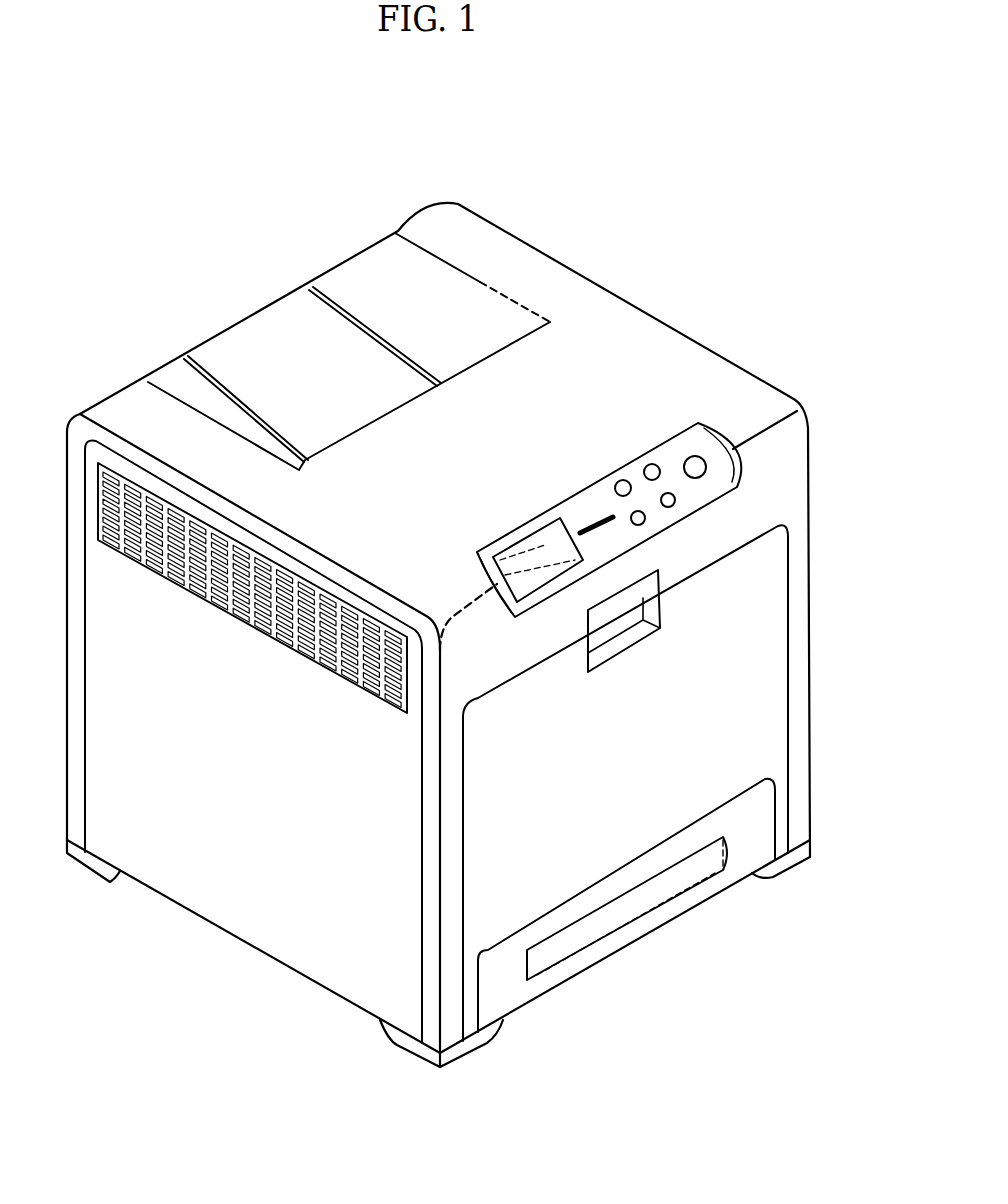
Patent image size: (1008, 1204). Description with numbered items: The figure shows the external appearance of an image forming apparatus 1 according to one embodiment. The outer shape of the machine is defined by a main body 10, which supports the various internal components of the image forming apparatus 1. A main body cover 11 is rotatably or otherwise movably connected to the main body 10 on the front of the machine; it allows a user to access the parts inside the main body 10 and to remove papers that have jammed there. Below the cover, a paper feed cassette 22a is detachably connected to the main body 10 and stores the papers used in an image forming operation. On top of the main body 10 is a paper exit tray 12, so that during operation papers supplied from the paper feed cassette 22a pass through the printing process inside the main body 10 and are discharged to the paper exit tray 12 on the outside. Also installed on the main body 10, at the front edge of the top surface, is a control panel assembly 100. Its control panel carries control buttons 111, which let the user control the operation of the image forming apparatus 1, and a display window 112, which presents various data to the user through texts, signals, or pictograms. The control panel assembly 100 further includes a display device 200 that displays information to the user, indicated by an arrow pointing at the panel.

The image forming apparatus 1 is at (438, 630).
The main body 10 is at (419, 663).
The main body cover 11 is at (672, 783).
The paper exit tray 12 is at (349, 351).
The paper feed cassette 22a is at (626, 917).
The control panel assembly 100 is at (687, 520).
The control buttons 111 is at (653, 459).
The display window 112 is at (523, 539).
The display device 200 is at (575, 480).